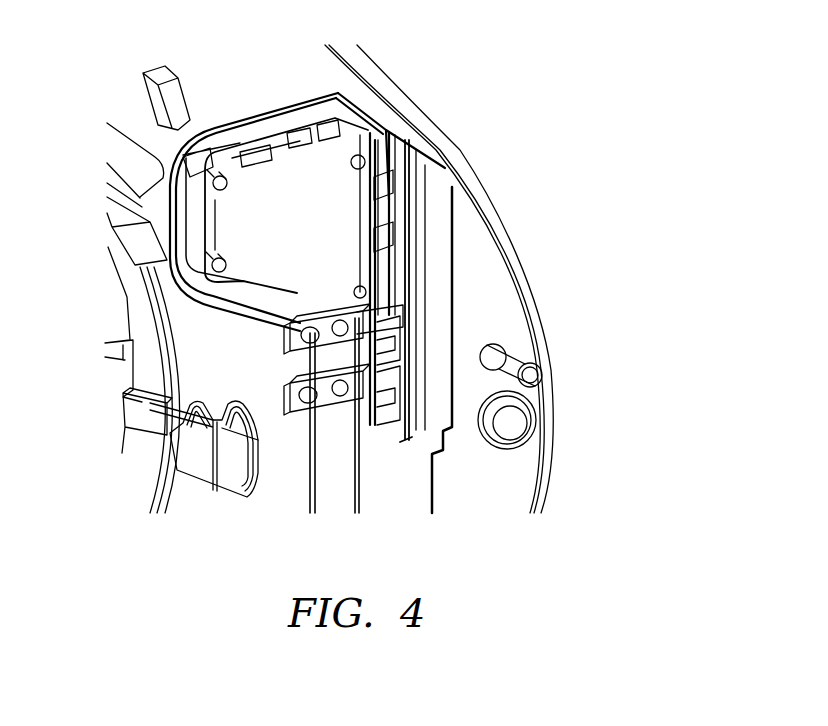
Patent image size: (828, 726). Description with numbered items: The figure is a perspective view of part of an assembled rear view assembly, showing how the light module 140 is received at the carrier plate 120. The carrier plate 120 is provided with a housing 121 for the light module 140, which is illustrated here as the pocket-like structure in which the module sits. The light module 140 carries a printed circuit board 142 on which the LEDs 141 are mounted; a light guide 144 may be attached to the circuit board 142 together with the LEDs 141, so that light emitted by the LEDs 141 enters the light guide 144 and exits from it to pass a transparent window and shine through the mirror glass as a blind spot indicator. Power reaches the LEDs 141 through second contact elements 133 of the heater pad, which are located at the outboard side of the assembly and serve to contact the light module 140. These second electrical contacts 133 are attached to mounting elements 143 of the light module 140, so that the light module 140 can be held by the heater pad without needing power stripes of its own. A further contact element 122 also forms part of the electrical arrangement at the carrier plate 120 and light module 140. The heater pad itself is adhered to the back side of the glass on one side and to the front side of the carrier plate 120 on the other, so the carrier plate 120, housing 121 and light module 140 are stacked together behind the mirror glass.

The carrier plate 120 is at (488, 284).
The housing 121 is at (285, 103).
The contact element 122 is at (334, 476).
The contact element 133 is at (285, 342).
The light module 140 is at (445, 462).
The LED 141 is at (392, 245).
The printed circuit board 142 is at (420, 270).
The mounting element 143 is at (385, 385).
The light guide 144 is at (333, 185).